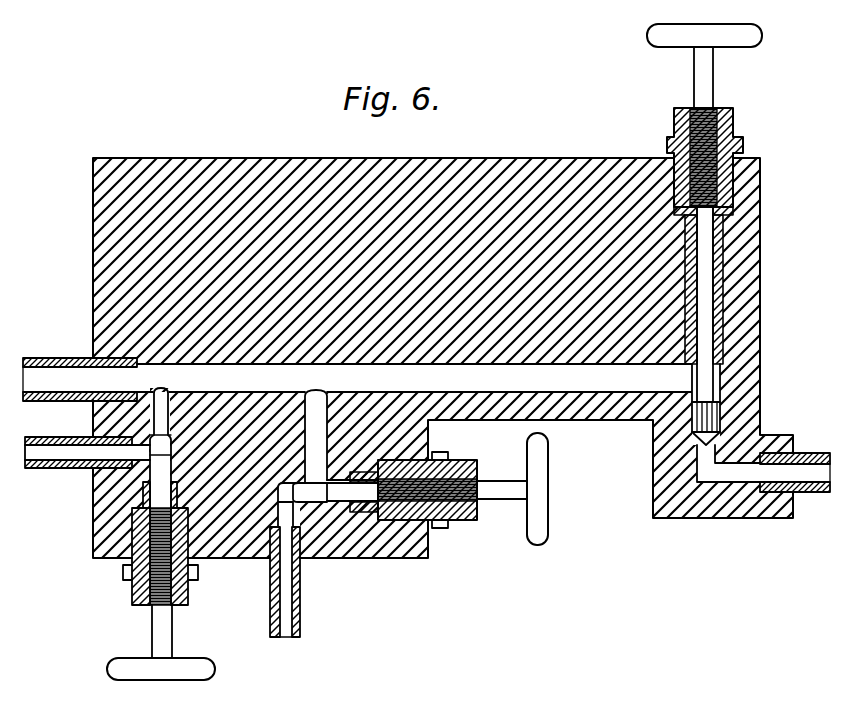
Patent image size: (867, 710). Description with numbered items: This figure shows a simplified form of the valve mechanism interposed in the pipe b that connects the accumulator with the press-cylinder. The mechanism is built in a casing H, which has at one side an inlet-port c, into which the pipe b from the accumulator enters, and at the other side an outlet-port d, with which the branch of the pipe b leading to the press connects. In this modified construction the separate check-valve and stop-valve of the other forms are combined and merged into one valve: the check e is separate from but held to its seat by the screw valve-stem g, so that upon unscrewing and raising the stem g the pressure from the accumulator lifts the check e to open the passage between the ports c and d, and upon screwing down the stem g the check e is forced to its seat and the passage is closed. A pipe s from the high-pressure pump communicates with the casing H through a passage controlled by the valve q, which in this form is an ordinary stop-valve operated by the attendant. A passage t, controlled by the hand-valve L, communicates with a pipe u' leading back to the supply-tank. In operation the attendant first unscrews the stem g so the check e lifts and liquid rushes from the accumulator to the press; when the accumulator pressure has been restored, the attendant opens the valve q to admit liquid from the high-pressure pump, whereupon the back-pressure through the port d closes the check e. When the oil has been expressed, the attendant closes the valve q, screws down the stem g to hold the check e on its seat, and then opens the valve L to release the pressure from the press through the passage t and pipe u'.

The casing H is at (402, 259).
The outlet-port d is at (428, 383).
The pipe b is at (426, 425).
The pipe s is at (87, 440).
The valve q is at (161, 534).
The passage t is at (316, 436).
The hand-valve L is at (422, 489).
The pipe u' is at (298, 582).
The valve-stem g is at (700, 377).
The check e is at (718, 417).
The inlet-port c is at (728, 465).